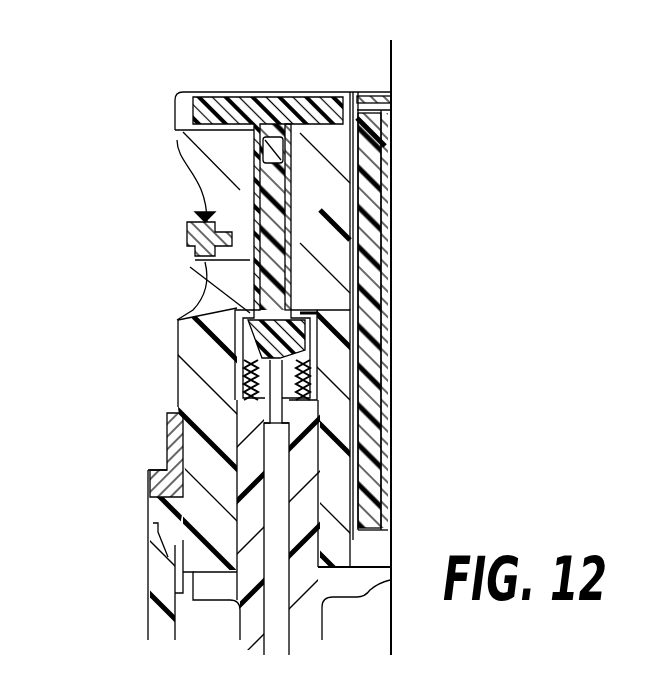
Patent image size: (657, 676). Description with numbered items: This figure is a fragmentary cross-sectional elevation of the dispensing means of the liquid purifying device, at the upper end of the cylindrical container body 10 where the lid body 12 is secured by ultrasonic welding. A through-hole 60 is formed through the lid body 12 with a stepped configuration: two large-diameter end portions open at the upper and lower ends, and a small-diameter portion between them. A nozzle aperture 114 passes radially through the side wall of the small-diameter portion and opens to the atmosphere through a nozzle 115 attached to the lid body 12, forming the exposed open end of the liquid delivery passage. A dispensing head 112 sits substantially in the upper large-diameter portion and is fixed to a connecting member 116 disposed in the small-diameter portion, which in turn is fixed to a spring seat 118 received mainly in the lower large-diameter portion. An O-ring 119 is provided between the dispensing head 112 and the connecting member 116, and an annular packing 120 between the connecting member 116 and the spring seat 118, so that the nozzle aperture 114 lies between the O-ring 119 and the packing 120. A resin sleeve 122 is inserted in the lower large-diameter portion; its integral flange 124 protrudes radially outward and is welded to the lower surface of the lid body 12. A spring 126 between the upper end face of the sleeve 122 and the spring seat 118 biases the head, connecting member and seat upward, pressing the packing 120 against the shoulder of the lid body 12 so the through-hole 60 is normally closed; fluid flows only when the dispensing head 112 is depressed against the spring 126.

The container body 10 is at (160, 580).
The lid body 12 is at (188, 148).
The through-hole 60 is at (240, 425).
The dispensing head 112 is at (318, 110).
The nozzle aperture 114 is at (235, 205).
The nozzle 115 is at (187, 247).
The connecting member 116 is at (272, 252).
The spring seat 118 is at (265, 333).
The O-ring 119 is at (292, 212).
The annular packing 120 is at (315, 312).
The sleeve 122 is at (222, 511).
The flange 124 is at (230, 572).
The spring 126 is at (248, 368).